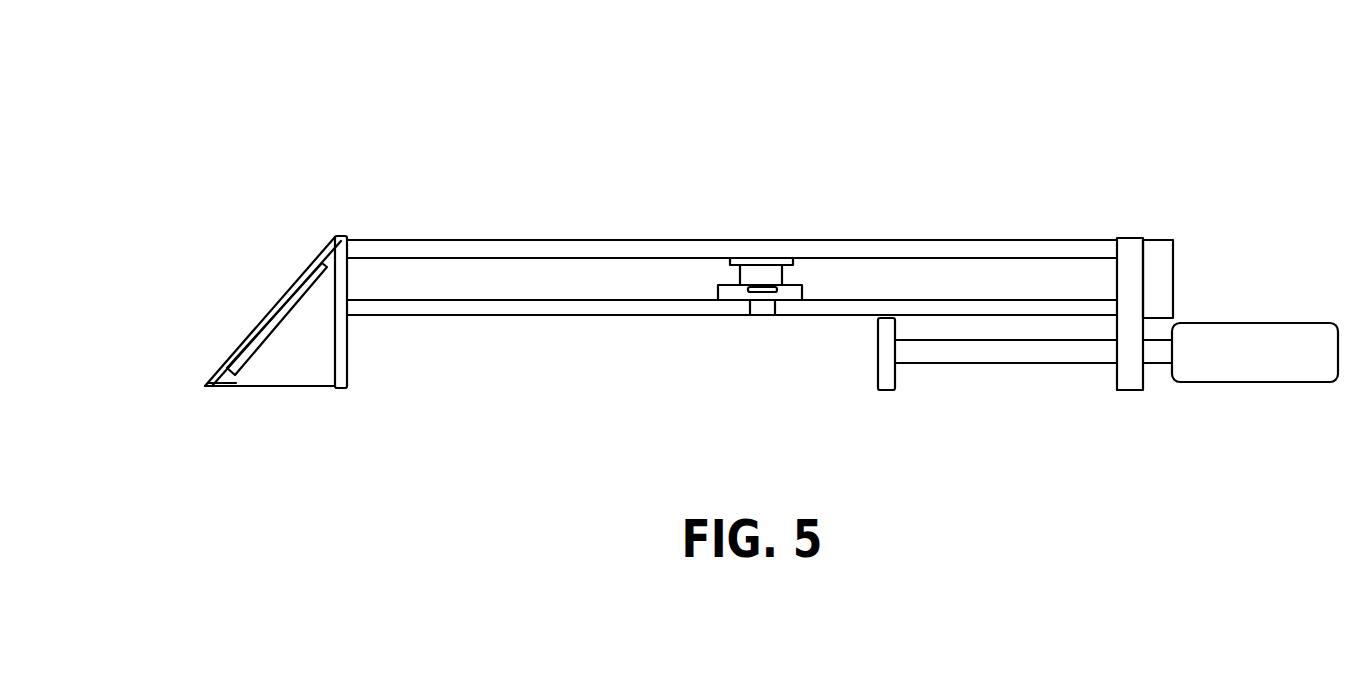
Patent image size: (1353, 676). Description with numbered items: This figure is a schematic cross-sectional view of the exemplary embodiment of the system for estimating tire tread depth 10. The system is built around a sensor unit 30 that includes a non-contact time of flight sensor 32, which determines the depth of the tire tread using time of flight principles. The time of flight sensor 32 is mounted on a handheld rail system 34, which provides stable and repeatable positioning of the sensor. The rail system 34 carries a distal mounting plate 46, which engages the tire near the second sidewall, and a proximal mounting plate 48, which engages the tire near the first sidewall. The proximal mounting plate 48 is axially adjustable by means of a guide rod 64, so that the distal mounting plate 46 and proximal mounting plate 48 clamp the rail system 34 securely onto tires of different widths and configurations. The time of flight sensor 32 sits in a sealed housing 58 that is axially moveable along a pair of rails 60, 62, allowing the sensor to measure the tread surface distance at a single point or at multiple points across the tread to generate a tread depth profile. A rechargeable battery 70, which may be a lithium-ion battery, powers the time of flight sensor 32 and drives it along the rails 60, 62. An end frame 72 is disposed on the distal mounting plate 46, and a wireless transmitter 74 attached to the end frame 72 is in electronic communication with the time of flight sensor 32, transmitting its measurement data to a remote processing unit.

The system for estimating tire tread depth 10 is at (995, 160).
The sensor unit 30 is at (340, 238).
The time of flight sensor 32 is at (768, 259).
The handheld rail system 34 is at (597, 238).
The distal mounting plate 46 is at (342, 389).
The proximal mounting plate 48 is at (886, 392).
The sealed housing 58 is at (802, 291).
The rail 60 is at (466, 240).
The rail 62 is at (546, 300).
The guide rod 64 is at (1016, 353).
The rechargeable battery 70 is at (1172, 282).
The end frame 72 is at (243, 386).
The wireless transmitter 74 is at (228, 363).